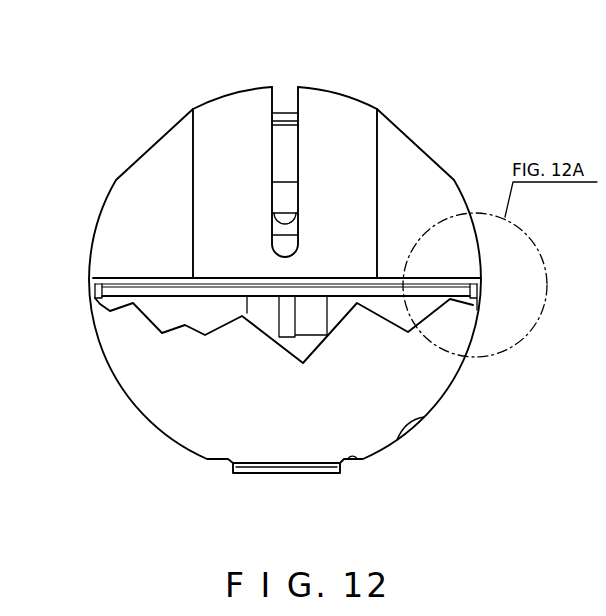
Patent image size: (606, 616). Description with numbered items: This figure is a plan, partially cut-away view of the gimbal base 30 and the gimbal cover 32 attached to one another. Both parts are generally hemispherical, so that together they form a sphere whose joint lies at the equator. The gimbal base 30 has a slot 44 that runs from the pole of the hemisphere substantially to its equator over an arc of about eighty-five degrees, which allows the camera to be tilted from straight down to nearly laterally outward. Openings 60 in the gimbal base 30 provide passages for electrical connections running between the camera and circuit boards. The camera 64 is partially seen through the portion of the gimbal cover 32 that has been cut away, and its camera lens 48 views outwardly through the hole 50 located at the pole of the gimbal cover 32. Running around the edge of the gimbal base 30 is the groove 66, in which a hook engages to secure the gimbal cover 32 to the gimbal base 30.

The gimbal base 30 is at (349, 118).
The gimbal cover 32 is at (418, 401).
The slot 44 is at (283, 97).
The camera lens 48 is at (257, 468).
The hole 50 is at (363, 459).
The openings 60 is at (150, 152).
The camera 64 is at (267, 313).
The groove 66 is at (122, 278).